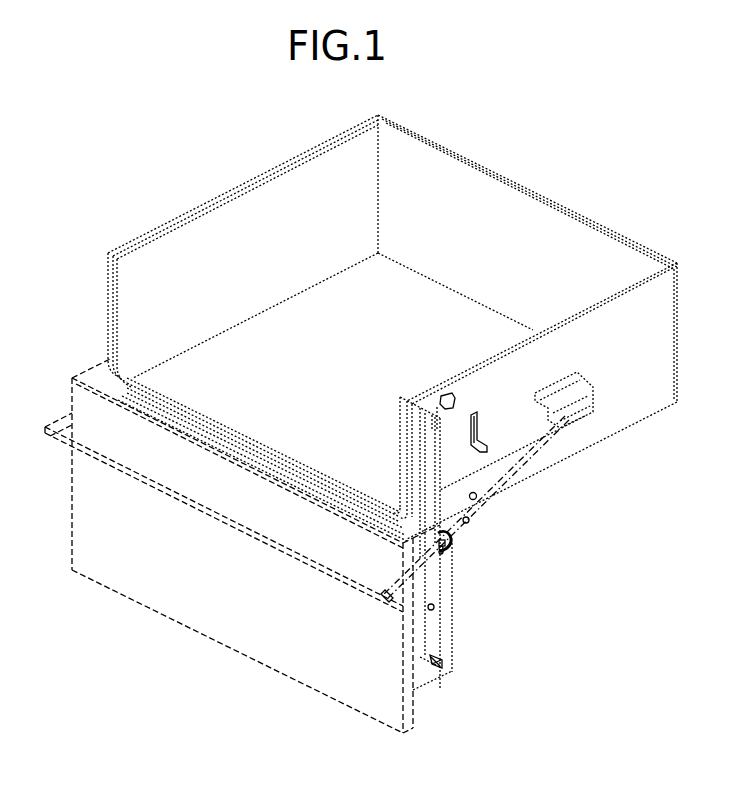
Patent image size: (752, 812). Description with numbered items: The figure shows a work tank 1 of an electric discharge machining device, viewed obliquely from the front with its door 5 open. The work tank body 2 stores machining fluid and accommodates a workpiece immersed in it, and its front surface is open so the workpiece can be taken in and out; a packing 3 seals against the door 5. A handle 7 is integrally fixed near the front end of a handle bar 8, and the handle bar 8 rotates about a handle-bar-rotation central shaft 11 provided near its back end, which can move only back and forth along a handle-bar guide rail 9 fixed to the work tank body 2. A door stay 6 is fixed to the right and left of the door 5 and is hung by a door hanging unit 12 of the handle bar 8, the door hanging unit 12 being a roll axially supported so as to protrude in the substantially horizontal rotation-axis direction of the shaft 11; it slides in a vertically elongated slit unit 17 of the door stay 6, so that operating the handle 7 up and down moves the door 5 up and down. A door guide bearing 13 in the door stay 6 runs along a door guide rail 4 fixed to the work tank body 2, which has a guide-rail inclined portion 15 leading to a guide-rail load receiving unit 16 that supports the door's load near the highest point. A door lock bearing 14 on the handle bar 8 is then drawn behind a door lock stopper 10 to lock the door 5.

The work tank 1 is at (172, 219).
The work tank body 2 is at (514, 188).
The packing 3 is at (107, 300).
The door guide rail 4 is at (453, 398).
The door 5 is at (217, 632).
The door stay 6 is at (453, 635).
The handle 7 is at (98, 453).
The handle bar 8 is at (469, 520).
The handle-bar guide rail 9 is at (596, 400).
The door lock stopper 10 is at (488, 450).
The handle-bar-rotation central shaft 11 is at (573, 421).
The door hanging unit 12 is at (437, 552).
The door guide bearing 13 is at (442, 543).
The door lock bearing 14 is at (476, 496).
The guide-rail inclined portion 15 is at (432, 415).
The guide-rail load receiving unit 16 is at (437, 407).
The slit unit 17 is at (432, 607).